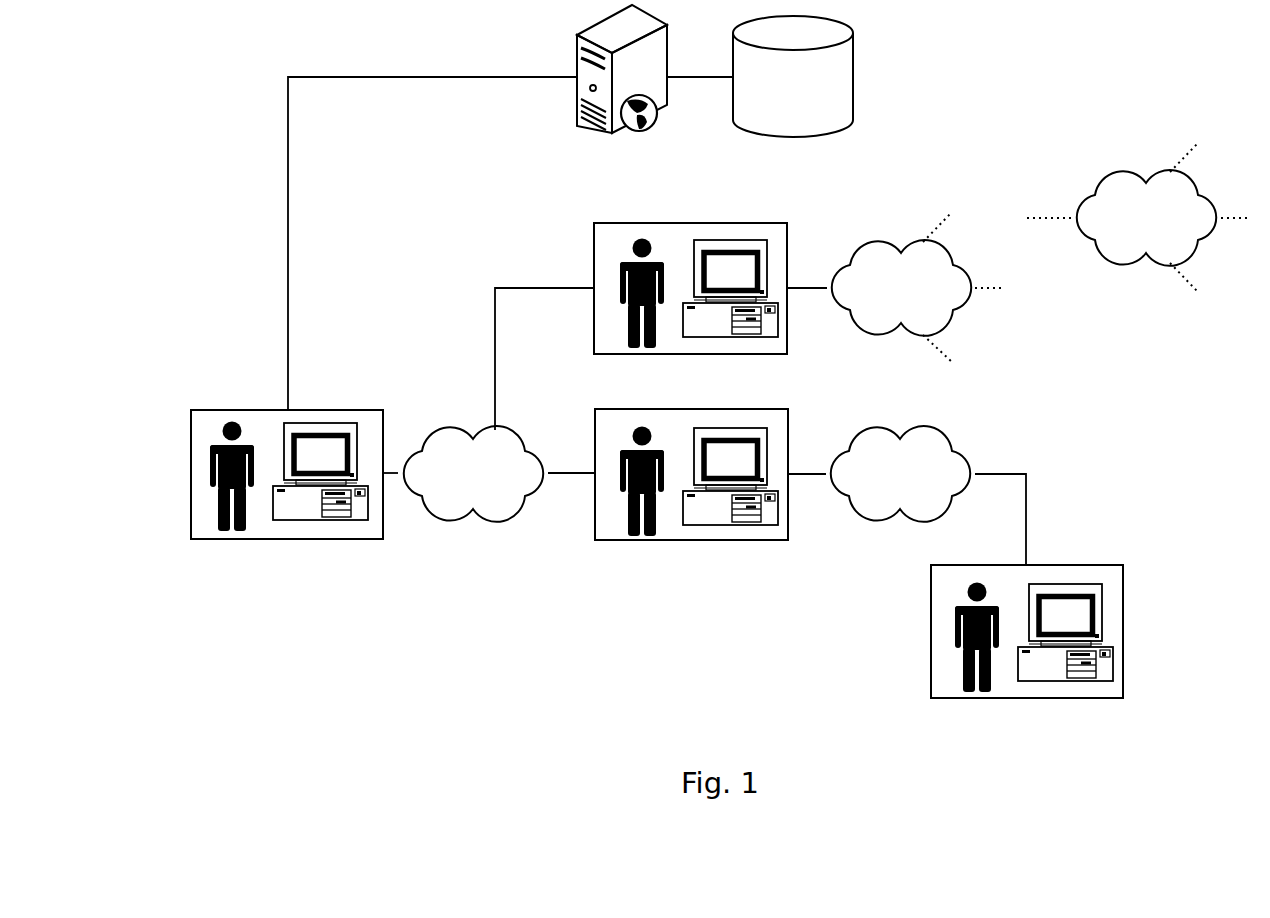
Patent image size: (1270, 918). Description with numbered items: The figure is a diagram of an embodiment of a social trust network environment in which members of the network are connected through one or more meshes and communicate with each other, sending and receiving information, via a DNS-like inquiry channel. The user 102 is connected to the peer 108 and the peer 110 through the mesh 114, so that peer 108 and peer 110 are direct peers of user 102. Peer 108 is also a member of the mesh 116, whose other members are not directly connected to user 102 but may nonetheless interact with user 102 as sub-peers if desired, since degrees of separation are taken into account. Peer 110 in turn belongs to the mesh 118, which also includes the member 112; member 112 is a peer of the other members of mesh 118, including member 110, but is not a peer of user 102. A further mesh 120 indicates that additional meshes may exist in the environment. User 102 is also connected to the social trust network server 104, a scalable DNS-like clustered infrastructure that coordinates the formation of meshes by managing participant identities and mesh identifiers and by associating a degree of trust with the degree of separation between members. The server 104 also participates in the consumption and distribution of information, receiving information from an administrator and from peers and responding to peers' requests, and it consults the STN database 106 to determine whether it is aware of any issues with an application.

The user 102 is at (213, 410).
The social trust network server 104 is at (577, 48).
The STN database 106 is at (853, 50).
The peer 108 is at (594, 245).
The peer 110 is at (595, 421).
The member 112 is at (1124, 575).
The mesh 114 is at (457, 427).
The mesh 116 is at (880, 242).
The mesh 118 is at (880, 428).
The mesh 120 is at (1122, 172).